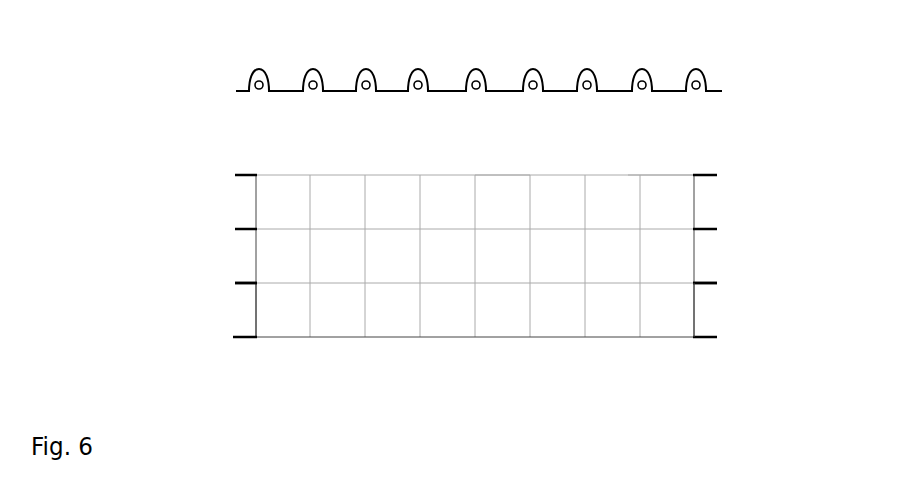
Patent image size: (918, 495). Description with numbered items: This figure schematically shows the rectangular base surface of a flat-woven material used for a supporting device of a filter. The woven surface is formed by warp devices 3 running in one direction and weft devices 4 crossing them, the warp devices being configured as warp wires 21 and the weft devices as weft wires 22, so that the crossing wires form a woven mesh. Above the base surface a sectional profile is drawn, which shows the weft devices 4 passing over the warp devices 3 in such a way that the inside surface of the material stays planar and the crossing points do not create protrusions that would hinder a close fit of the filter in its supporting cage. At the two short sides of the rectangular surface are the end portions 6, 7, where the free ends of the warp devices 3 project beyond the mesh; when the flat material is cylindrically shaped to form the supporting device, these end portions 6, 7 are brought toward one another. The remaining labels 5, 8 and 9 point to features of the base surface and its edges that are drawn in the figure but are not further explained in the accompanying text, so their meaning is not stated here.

The warp devices 3 is at (284, 90).
The weft devices 4 is at (414, 90).
The mesh grid 5 is at (339, 200).
The end portion 6 is at (193, 219).
The end portion 7 is at (742, 205).
The left edge thread 8 is at (256, 285).
The right edge thread 9 is at (694, 286).
The warp wires 21 is at (486, 175).
The weft wires 22 is at (697, 314).